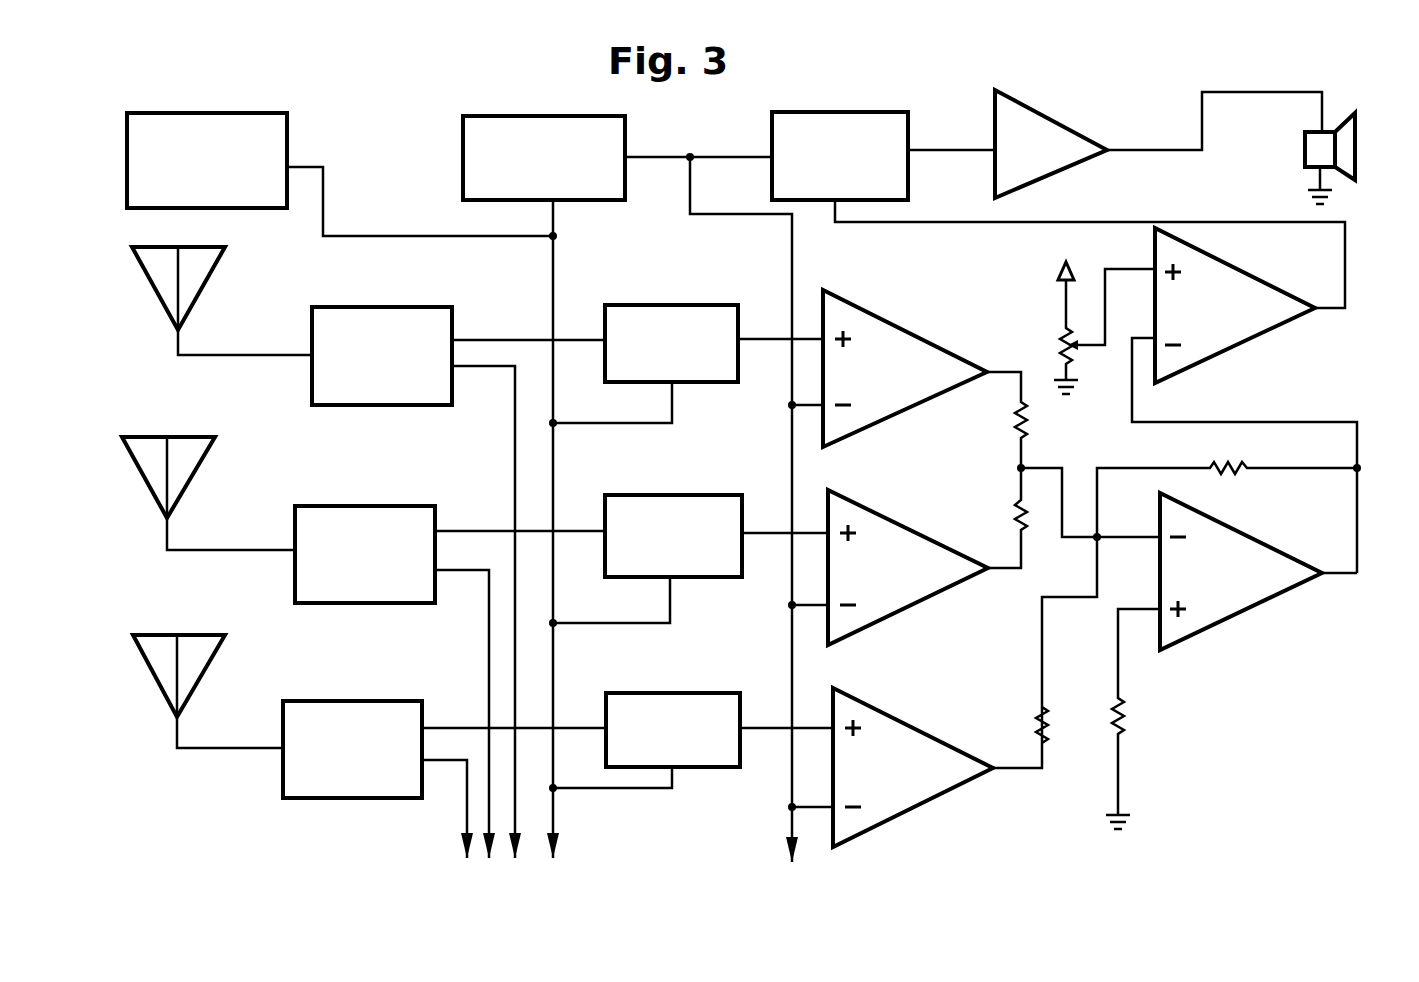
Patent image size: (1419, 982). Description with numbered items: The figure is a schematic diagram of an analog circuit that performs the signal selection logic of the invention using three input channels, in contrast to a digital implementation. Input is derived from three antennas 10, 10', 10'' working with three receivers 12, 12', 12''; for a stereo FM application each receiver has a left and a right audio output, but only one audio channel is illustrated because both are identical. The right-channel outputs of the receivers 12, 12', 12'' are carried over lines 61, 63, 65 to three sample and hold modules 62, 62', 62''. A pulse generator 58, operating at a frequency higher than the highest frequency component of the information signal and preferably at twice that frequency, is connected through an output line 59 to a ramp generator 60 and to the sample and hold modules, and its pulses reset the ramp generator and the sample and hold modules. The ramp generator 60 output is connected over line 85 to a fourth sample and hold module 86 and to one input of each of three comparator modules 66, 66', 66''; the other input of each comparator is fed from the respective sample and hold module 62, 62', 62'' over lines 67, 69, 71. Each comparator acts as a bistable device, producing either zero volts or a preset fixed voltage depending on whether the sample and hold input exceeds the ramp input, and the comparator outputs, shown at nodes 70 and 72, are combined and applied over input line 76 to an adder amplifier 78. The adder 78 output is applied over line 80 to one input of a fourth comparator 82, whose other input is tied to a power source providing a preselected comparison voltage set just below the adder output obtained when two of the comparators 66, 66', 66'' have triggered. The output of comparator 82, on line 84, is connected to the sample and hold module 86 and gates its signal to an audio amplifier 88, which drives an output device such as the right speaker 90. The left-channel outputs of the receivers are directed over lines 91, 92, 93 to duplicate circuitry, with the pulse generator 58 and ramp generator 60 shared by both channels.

The pulse generator 58 is at (130, 118).
The pulse generator output line 59 is at (421, 204).
The ramp generator 60 is at (520, 116).
The line 85 is at (792, 468).
The fourth sample and hold module 86 is at (838, 112).
The audio amplifier 88 is at (1040, 114).
The right speaker 90 is at (1318, 140).
The comparator output line 84 is at (1108, 254).
The fourth comparator 82 is at (1228, 284).
The sample and hold module 62 is at (671, 322).
The sample and hold module 62' is at (673, 514).
The sample and hold module 62'' is at (673, 708).
The line 67 is at (780, 324).
The line 69 is at (785, 518).
The line 71 is at (786, 714).
The comparator module 66 is at (905, 385).
The comparator module 66' is at (908, 585).
The comparator module 66'' is at (941, 767).
The comparator output node 70 is at (1012, 409).
The comparator output node 72 is at (1007, 534).
The comparator input line 76 is at (1090, 504).
The adder amplifier 78 is at (1230, 592).
The line 80 is at (1193, 615).
The antenna 10 is at (206, 301).
The antenna 10' is at (196, 493).
The antenna 10'' is at (194, 691).
The receiver 12 is at (382, 356).
The receiver 12' is at (365, 554).
The receiver 12'' is at (352, 749).
The line 61 is at (528, 327).
The line 63 is at (520, 518).
The line 65 is at (514, 715).
The line 91 is at (517, 807).
The line 92 is at (490, 820).
The line 93 is at (467, 812).